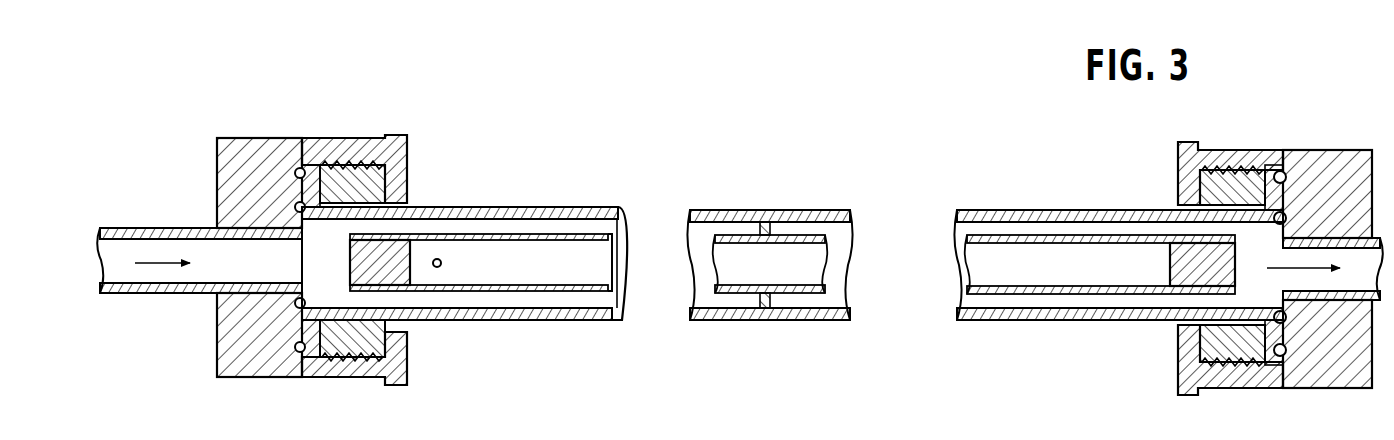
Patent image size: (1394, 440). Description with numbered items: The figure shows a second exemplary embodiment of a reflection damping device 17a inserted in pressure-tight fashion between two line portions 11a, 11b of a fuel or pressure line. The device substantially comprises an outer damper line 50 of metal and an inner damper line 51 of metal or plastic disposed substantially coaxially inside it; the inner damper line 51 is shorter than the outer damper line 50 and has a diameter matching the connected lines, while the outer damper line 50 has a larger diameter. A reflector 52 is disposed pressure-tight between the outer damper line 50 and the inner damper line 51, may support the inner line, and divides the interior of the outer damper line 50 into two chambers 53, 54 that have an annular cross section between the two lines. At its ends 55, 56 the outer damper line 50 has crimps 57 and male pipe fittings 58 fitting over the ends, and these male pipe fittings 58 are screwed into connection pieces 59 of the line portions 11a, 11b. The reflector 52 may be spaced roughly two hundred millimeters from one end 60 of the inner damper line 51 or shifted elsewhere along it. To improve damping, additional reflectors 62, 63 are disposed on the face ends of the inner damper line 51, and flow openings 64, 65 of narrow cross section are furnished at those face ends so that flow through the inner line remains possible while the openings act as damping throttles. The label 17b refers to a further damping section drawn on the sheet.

The line portion 11a is at (140, 228).
The line portion 11b is at (1372, 262).
The reflection damping device 17a is at (755, 130).
The damper section 17b is at (523, 434).
The outer damper line 50 is at (590, 207).
The inner damper line 51 is at (613, 238).
The reflector 52 is at (762, 225).
The chamber 53 is at (486, 227).
The chamber 54 is at (818, 230).
The end 55 is at (300, 220).
The end 56 is at (1292, 215).
The crimp 57 is at (313, 180).
The male pipe fitting 58 is at (400, 142).
The connection piece 59 is at (225, 197).
The end of the inner damper line 60 is at (412, 290).
The additional reflector 62 is at (348, 277).
The additional reflector 63 is at (1243, 283).
The flow opening 64 is at (438, 259).
The flow opening 65 is at (1143, 238).